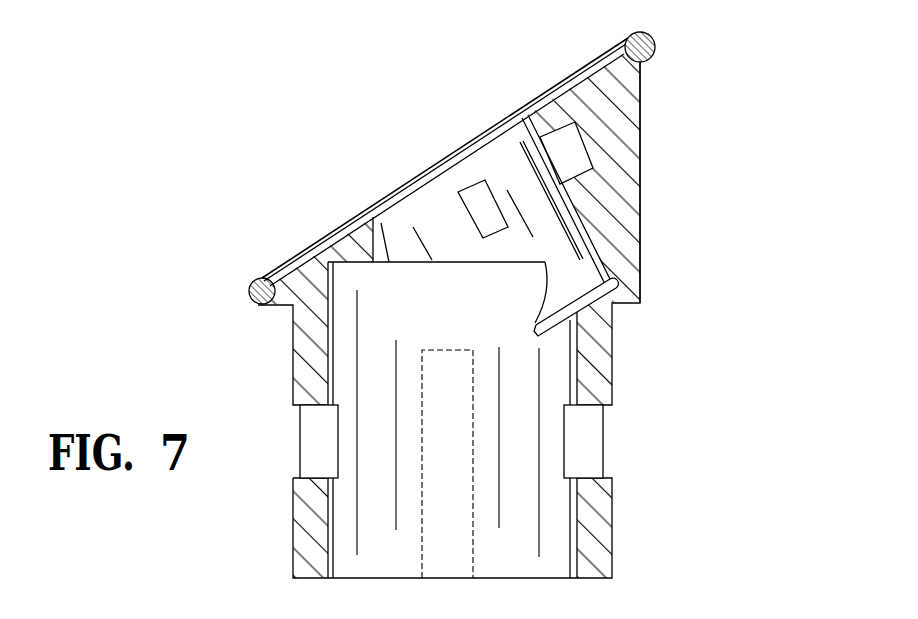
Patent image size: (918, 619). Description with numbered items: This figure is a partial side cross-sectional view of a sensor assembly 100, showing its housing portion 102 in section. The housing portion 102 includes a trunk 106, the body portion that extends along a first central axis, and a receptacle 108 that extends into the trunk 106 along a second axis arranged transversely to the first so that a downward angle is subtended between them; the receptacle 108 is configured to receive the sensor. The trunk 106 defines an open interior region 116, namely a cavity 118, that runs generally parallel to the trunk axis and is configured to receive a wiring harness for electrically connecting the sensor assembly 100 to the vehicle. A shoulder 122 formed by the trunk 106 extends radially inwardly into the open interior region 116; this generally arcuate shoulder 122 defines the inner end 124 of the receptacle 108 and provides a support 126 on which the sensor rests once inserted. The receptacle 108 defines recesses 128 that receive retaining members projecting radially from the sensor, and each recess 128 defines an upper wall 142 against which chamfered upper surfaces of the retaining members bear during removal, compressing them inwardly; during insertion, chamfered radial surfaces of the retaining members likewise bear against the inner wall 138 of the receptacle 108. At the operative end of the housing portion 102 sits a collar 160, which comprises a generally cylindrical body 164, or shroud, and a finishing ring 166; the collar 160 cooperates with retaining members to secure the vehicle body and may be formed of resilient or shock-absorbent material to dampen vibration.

The sensor assembly 100 is at (279, 205).
The housing portion 102 is at (661, 326).
The trunk 106 is at (256, 372).
The receptacle 108 is at (579, 204).
The open interior region 116 is at (378, 510).
The cavity 118 is at (440, 458).
The shoulder 122 is at (554, 330).
The inner end 124 is at (599, 223).
The support 126 is at (578, 302).
The recess 128 is at (484, 203).
The inner wall 138 is at (385, 247).
The upper wall 142 is at (564, 135).
The collar 160 is at (652, 100).
The body 164 is at (641, 152).
The finishing ring 166 is at (652, 38).